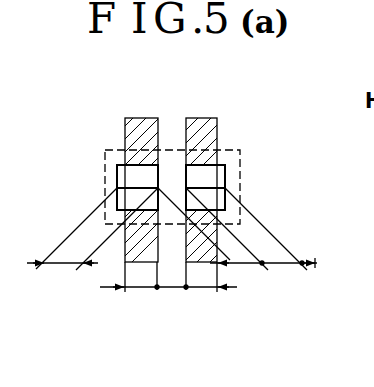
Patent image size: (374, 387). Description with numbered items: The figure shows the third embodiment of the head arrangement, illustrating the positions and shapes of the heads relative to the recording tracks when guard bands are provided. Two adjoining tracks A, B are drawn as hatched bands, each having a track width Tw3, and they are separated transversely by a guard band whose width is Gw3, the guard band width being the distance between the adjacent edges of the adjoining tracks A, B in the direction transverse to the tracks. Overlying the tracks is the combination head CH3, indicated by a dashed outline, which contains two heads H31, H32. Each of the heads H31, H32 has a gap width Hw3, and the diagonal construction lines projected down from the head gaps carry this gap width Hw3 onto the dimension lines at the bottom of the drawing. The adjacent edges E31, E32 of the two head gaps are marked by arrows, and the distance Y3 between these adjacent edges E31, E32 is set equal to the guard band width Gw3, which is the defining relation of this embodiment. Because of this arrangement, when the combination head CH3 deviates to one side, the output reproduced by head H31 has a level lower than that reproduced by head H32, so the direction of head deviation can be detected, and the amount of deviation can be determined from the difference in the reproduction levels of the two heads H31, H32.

The head H31 is at (122, 177).
The head H32 is at (225, 170).
The combination head CH3 is at (241, 186).
The track A is at (142, 108).
The track B is at (203, 108).
The edge of head gap E31 is at (157, 290).
The edge of head gap E32 is at (186, 290).
The gap width of heads Hw3 is at (172, 277).
The track width Tw3 is at (240, 298).
The distance between adjacent edges of head gaps Y3 is at (242, 263).
The guard band width Gw3 is at (166, 287).